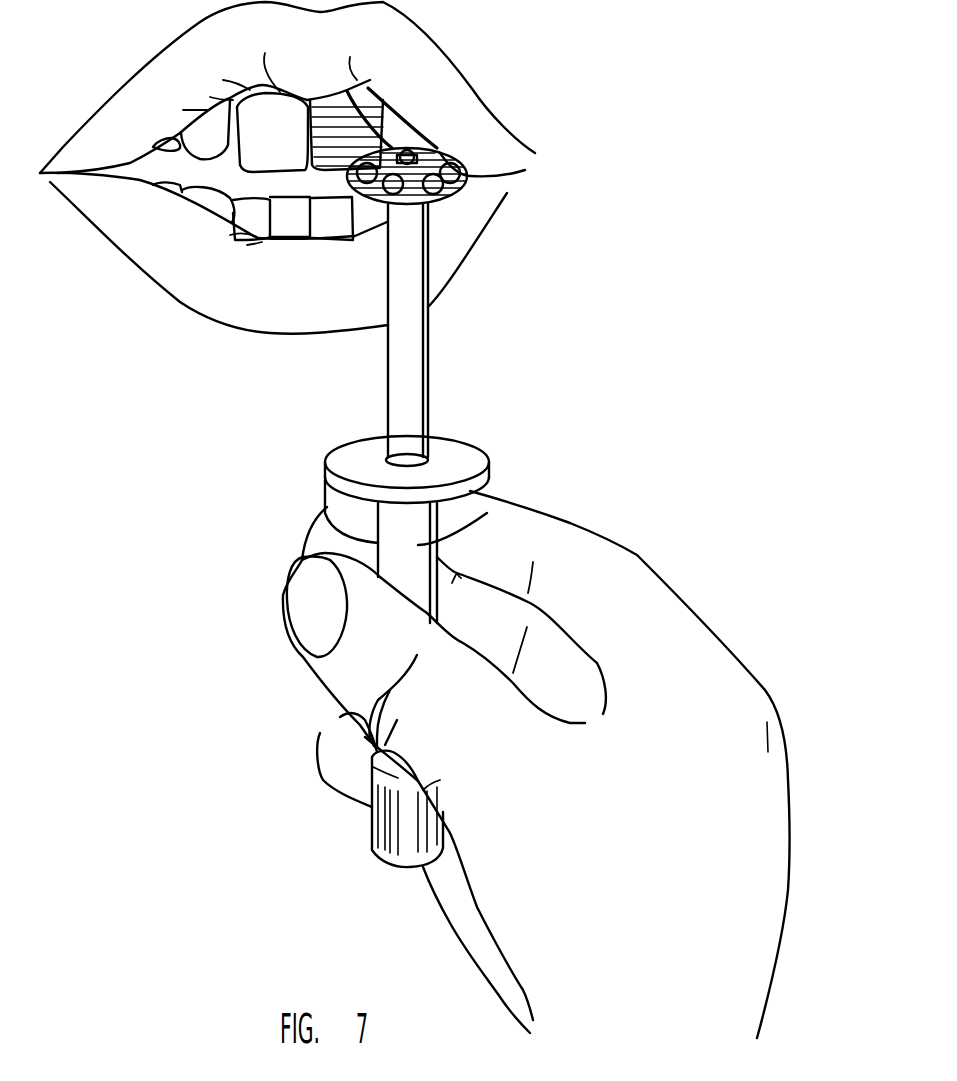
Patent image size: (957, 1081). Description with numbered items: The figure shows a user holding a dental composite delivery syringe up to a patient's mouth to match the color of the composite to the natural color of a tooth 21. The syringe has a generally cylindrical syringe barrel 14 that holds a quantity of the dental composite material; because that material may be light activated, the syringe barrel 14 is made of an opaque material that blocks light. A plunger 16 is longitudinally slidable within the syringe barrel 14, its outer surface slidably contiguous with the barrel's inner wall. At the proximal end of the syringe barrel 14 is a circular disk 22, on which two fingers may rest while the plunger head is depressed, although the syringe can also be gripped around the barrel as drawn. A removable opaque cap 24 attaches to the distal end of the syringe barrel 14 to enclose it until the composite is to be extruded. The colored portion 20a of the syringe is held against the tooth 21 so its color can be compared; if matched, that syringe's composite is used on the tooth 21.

The syringe barrel 14 is at (487, 513).
The plunger 16 is at (413, 340).
The colored portion 20a is at (437, 147).
The tooth 21 is at (370, 92).
The circular disk 22 is at (453, 453).
The removable opaque cap 24 is at (387, 837).